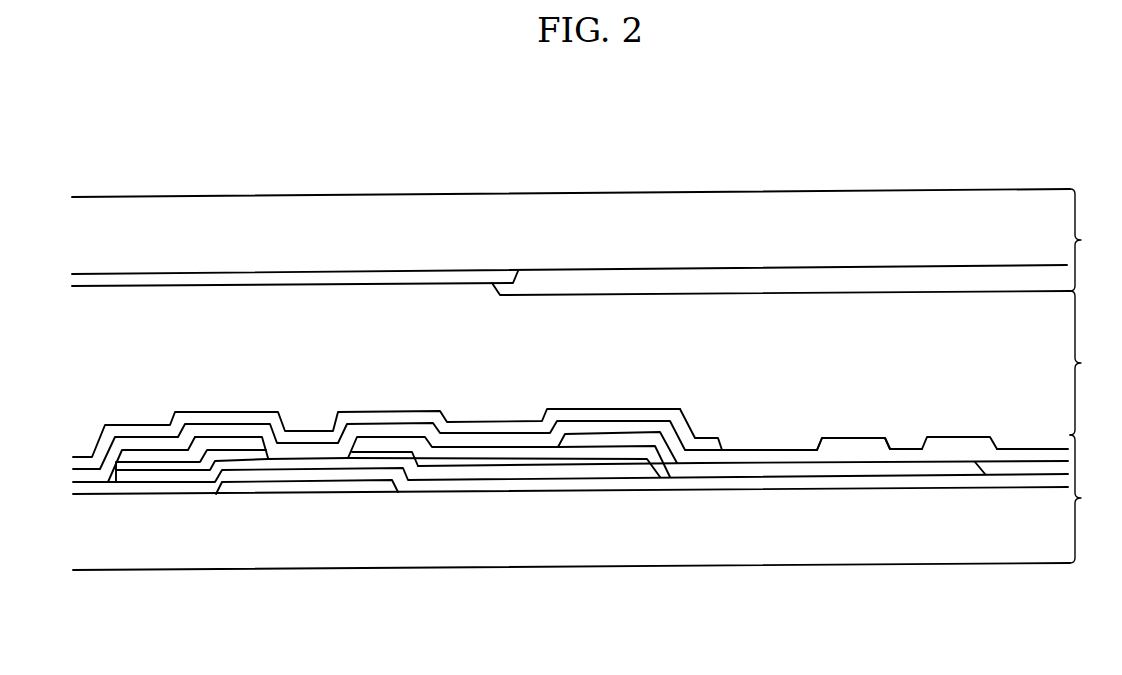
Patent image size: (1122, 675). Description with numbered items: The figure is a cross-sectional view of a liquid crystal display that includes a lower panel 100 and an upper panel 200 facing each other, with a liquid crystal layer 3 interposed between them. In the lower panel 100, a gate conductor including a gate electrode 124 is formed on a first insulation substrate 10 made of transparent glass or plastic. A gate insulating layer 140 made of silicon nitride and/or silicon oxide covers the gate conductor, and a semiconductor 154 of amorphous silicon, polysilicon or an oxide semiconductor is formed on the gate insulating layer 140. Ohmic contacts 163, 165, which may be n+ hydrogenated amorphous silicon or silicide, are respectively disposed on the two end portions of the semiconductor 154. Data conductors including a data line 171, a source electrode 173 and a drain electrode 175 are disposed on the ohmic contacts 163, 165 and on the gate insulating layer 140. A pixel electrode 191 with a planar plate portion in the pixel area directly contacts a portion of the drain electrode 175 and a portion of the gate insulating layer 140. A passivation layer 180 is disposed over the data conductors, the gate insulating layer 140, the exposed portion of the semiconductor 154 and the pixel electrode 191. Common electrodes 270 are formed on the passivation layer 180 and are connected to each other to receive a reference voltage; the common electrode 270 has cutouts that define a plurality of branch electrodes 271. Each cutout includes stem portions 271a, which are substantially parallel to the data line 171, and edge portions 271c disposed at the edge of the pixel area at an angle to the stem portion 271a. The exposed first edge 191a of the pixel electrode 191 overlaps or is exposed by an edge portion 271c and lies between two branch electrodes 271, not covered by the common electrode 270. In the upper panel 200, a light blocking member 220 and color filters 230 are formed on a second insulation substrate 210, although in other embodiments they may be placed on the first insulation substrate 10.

The first insulation substrate 10 is at (620, 540).
The gate electrode 124 is at (312, 488).
The gate insulating layer 140 is at (425, 485).
The semiconductor 154 is at (482, 474).
The ohmic contact 163 is at (220, 453).
The ohmic contact 165 is at (547, 463).
The data line 171 is at (132, 458).
The source electrode 173 is at (252, 443).
The drain electrode 175 is at (375, 440).
The passivation layer 180 is at (762, 455).
The pixel electrode 191 is at (697, 470).
The first edge of the pixel electrode 191a is at (982, 468).
The common electrode 270 is at (613, 412).
The branch electrode 271 is at (848, 443).
The stem portion 271a is at (893, 440).
The edge portion 271c is at (723, 443).
The second insulation substrate 210 is at (607, 228).
The light blocking member 220 is at (398, 278).
The color filter 230 is at (810, 285).
The upper panel 200 is at (1094, 240).
The liquid crystal layer 3 is at (1084, 363).
The lower panel 100 is at (1094, 499).